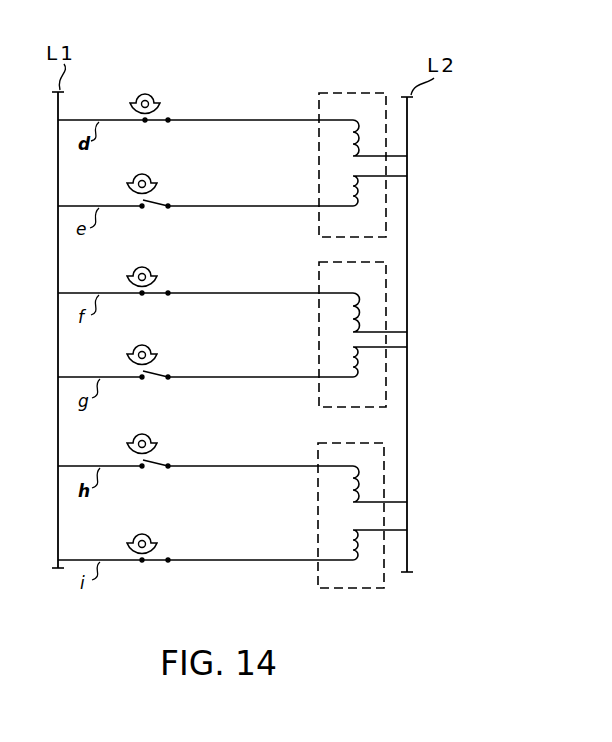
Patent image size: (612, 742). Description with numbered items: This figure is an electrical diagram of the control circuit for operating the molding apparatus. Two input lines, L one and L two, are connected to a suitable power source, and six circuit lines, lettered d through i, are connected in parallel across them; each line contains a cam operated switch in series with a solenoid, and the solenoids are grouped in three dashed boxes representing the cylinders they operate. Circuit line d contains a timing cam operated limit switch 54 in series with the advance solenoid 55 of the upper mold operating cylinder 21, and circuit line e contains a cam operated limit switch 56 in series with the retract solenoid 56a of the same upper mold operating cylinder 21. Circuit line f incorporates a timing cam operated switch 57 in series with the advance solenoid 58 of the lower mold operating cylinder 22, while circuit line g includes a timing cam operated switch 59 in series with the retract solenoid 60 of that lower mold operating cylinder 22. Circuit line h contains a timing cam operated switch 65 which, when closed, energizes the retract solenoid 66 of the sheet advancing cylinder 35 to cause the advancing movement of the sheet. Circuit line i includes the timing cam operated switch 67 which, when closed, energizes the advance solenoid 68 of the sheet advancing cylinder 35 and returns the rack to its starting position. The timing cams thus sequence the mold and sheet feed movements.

The timing cam operated limit switch 54 is at (156, 119).
The cam operated limit switch 56 is at (160, 202).
The timing cam operated switch 57 is at (156, 292).
The timing cam operated switch 59 is at (160, 373).
The timing cam operated switch 65 is at (160, 462).
The timing cam operated switch 67 is at (156, 559).
The upper mold operating cylinder 21 is at (386, 192).
The lower mold operating cylinder 22 is at (386, 358).
The sheet advancing cylinder 35 is at (384, 515).
The advance solenoid 55 is at (361, 141).
The retract solenoid 56a is at (359, 201).
The advance solenoid 58 is at (361, 312).
The retract solenoid 60 is at (359, 372).
The retract solenoid 66 is at (361, 473).
The advance solenoid 68 is at (359, 545).